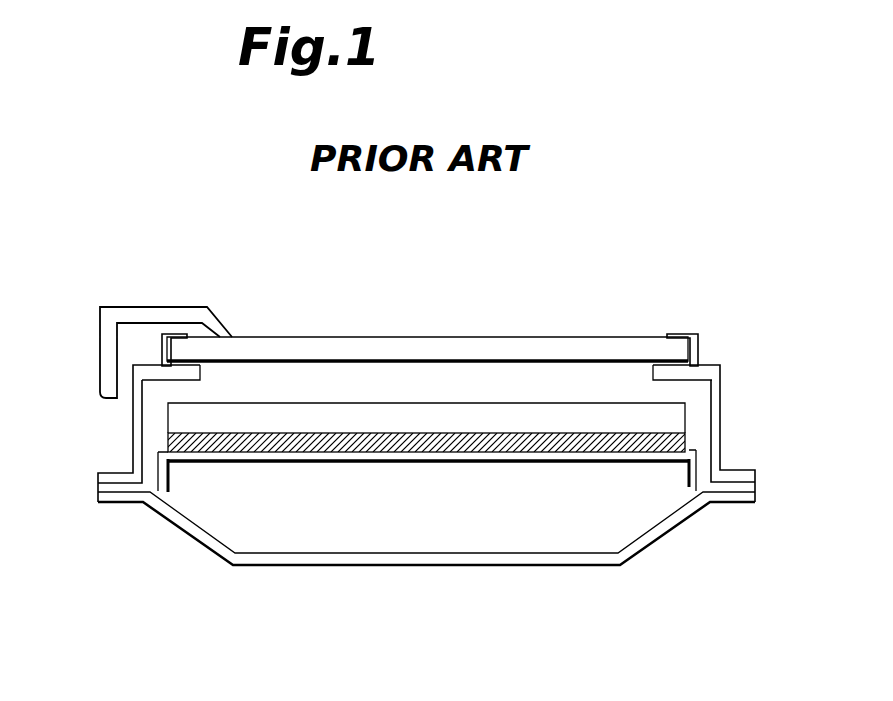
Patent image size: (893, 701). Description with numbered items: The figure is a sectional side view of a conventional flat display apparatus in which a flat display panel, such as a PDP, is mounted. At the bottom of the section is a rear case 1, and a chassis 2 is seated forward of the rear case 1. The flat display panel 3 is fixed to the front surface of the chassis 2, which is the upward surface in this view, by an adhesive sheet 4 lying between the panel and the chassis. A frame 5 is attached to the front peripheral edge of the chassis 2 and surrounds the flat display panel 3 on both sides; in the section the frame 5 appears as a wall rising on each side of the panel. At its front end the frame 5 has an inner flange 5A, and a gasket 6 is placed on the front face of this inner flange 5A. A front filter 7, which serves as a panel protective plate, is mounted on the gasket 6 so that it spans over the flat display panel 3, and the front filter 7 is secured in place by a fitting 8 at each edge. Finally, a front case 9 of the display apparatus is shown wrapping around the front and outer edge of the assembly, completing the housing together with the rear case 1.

The rear case 1 is at (502, 563).
The chassis 2 is at (382, 465).
The flat display panel 3 is at (375, 402).
The adhesive sheet 4 is at (540, 437).
The frame 5 is at (133, 424).
The inner flange 5A is at (137, 386).
The gasket 6 is at (197, 368).
The front filter 7 is at (492, 338).
The fitting 8 is at (161, 352).
The front case 9 is at (181, 307).